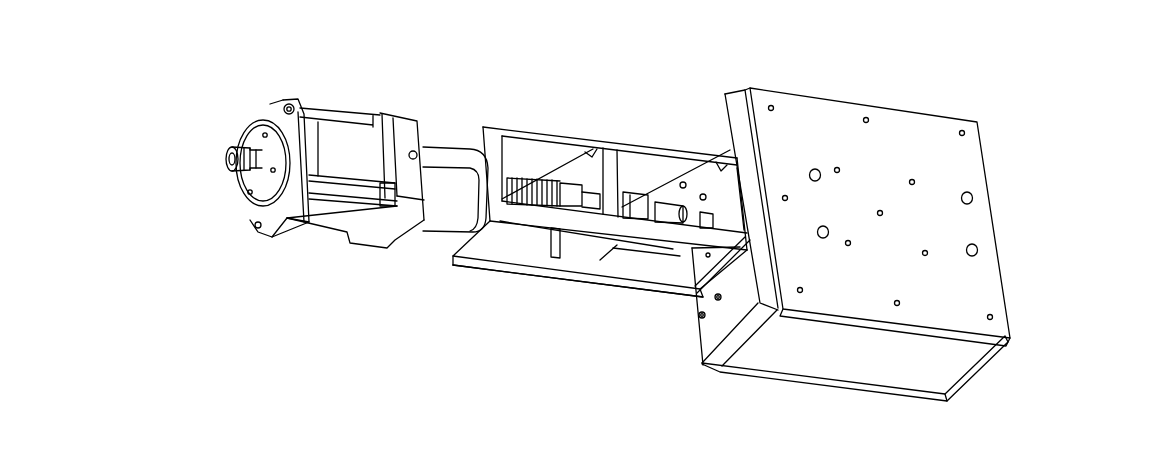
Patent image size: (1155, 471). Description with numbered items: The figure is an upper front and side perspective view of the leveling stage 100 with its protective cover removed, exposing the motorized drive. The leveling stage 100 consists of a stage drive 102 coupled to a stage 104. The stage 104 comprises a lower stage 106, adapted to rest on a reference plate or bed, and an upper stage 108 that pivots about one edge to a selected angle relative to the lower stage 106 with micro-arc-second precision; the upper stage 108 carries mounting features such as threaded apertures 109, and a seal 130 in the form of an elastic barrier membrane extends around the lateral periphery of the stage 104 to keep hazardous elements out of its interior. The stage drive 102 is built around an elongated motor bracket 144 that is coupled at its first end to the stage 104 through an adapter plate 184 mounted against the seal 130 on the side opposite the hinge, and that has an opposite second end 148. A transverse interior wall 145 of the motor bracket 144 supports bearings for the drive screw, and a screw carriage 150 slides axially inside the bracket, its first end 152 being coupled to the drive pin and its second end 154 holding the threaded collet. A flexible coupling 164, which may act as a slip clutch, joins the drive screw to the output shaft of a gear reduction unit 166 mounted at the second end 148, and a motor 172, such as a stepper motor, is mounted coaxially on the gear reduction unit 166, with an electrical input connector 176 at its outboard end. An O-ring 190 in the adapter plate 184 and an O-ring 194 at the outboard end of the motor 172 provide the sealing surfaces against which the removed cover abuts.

The leveling stage 100 is at (392, 346).
The stage drive 102 is at (487, 105).
The stage 104 is at (1008, 224).
The lower stage 106 is at (922, 397).
The upper stage 108 is at (973, 152).
The threaded apertures 109 is at (972, 198).
The seal 130 is at (957, 355).
The motor bracket 144 is at (563, 140).
The transverse interior wall 145 is at (609, 150).
The second end 148 is at (450, 258).
The screw carriage 150 is at (644, 250).
The first end 152 is at (677, 200).
The second end 154 is at (647, 202).
The flexible coupling 164 is at (528, 178).
The gear reduction unit 166 is at (437, 217).
The motor 172 is at (325, 222).
The electrical input connector 176 is at (230, 174).
The adapter plate 184 is at (707, 338).
The O-ring 190 is at (732, 152).
The O-ring 194 is at (257, 117).